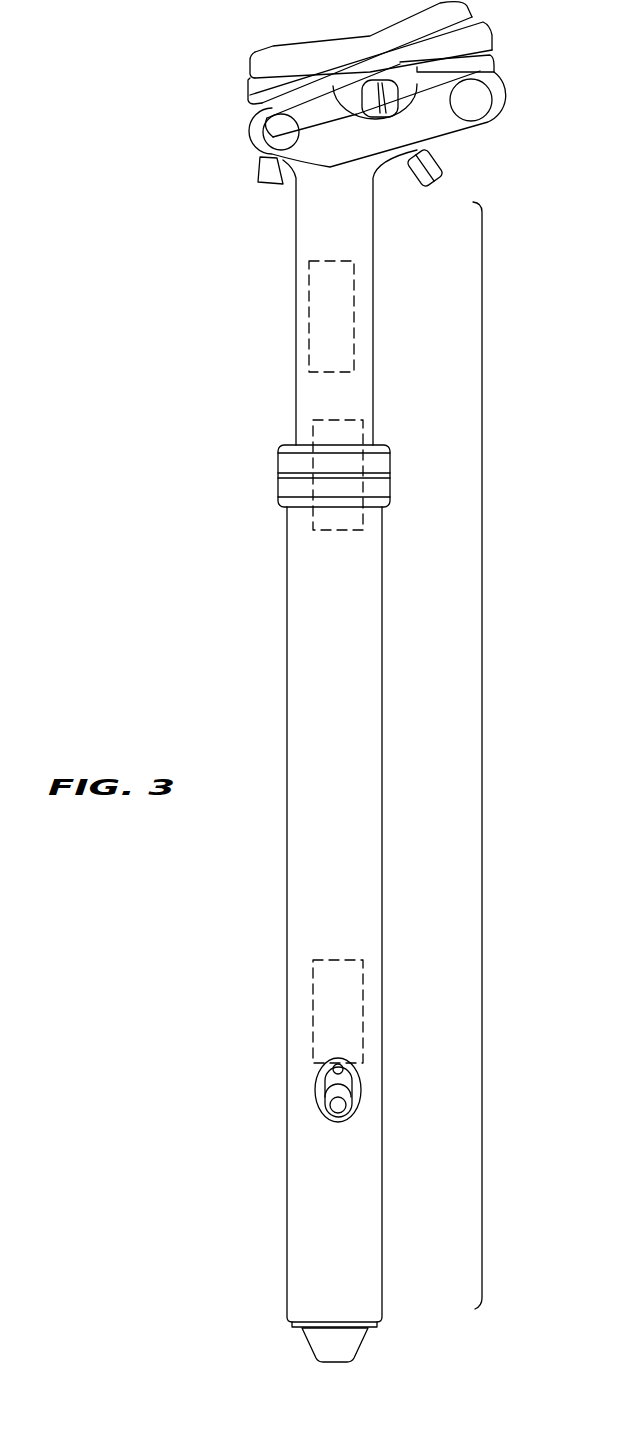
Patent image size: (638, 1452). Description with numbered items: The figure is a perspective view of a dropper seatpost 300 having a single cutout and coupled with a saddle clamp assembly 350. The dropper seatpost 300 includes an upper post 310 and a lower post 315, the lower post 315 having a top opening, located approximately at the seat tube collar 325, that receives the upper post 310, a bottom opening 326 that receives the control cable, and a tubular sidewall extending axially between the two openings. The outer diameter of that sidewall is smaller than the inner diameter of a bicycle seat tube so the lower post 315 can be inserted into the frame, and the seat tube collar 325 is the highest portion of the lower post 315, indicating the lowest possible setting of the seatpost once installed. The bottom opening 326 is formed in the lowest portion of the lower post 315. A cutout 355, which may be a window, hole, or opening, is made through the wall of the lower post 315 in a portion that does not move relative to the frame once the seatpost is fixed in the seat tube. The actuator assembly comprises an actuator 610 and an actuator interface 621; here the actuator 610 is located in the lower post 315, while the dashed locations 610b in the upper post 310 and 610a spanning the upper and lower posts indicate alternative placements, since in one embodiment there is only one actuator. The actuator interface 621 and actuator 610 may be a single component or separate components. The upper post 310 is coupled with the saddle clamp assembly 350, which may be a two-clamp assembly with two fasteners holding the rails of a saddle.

The dropper seatpost 300 is at (482, 753).
The upper post 310 is at (296, 233).
The lower post 315 is at (287, 645).
The seat tube collar 325 is at (278, 453).
The bottom opening 326 is at (312, 1337).
The saddle clamp assembly 350 is at (497, 62).
The cutout 355 is at (313, 1093).
The actuator 610 is at (365, 1017).
The actuator 610a is at (367, 520).
The actuator 610b is at (354, 320).
The actuator interface 621 is at (362, 1100).